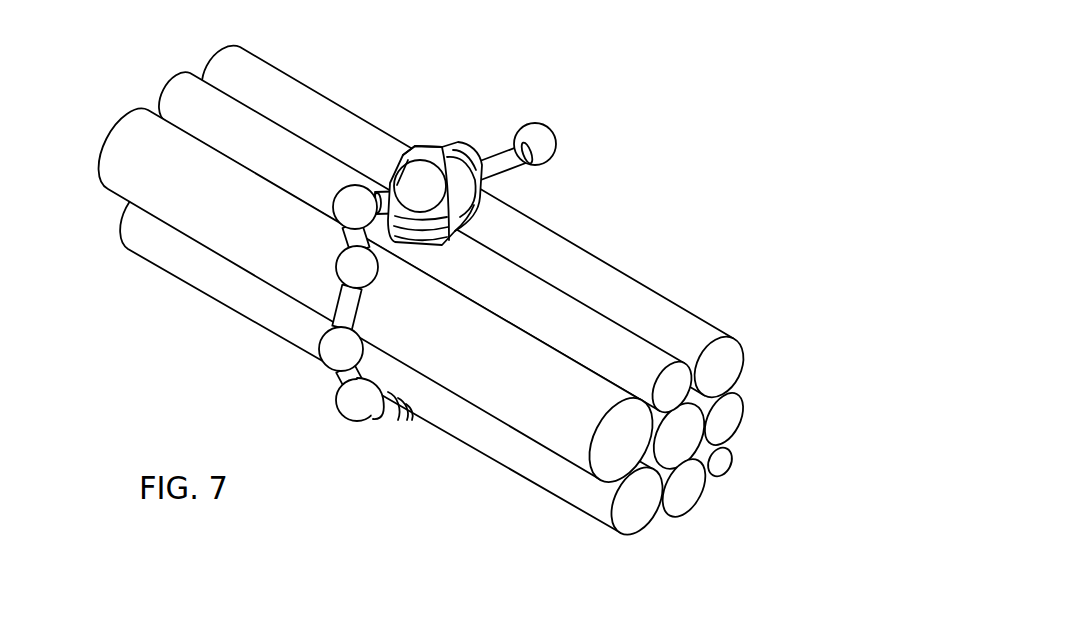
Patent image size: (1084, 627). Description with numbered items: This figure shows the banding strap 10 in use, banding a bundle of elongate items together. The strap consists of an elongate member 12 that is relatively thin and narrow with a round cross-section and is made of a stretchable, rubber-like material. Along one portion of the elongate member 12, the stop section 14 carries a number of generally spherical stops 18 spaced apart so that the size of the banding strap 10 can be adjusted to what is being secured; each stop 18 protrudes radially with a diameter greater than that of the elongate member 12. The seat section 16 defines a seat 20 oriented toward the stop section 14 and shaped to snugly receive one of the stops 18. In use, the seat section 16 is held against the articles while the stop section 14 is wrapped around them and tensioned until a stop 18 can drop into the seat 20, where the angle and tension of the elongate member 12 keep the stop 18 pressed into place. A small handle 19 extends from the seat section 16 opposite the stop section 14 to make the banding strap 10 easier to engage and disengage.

The banding strap 10 is at (426, 288).
The elongate member 12 is at (308, 260).
The stop section 14 is at (384, 436).
The seat section 16 is at (533, 193).
The stop 18 is at (422, 182).
The handle 19 is at (480, 164).
The seat 20 is at (457, 230).